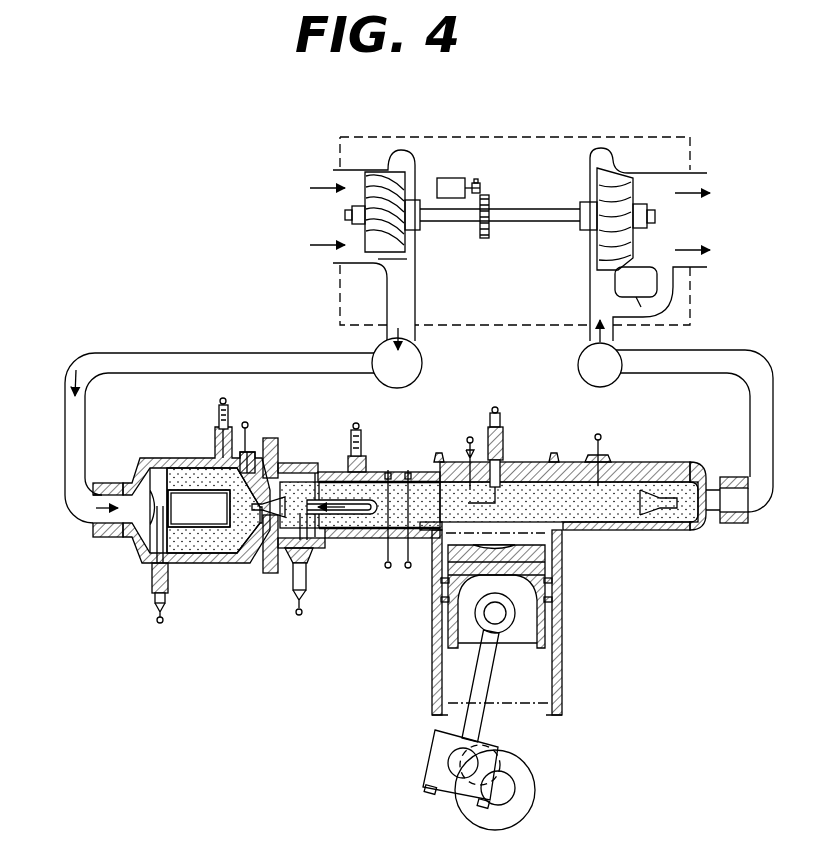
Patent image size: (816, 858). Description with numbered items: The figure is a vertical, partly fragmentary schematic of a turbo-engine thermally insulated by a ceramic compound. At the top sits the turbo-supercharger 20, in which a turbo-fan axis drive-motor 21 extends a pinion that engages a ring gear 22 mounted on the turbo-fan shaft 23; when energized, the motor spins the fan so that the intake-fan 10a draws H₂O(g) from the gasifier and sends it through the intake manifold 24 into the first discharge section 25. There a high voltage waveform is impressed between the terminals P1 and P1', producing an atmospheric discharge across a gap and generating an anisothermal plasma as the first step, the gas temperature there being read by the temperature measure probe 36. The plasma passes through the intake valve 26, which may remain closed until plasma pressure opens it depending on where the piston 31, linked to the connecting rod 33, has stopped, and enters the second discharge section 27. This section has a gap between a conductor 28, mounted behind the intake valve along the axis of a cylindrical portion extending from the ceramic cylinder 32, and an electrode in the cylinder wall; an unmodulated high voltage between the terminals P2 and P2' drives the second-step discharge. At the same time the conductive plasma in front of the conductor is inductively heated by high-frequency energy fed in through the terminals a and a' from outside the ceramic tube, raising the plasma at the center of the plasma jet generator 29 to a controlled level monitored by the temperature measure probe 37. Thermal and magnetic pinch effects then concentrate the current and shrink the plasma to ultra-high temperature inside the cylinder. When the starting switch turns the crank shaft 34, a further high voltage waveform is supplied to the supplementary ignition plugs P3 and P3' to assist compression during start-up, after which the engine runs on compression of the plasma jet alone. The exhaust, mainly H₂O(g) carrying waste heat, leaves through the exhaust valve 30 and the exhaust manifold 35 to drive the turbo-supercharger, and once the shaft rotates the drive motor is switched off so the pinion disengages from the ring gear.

The intake-fan 10a is at (385, 178).
The turbo-supercharger 20 is at (556, 137).
The turbo-fan axis drive-motor 21 is at (455, 186).
The ring gear 22 is at (488, 234).
The shaft of the turbo-fan 23 is at (528, 209).
The intake manifold 24 is at (421, 366).
The first discharge section 25 is at (196, 547).
The intake valve 26 is at (257, 575).
The second discharge section 27 is at (330, 540).
The conductor 28 is at (338, 498).
The plasma jet generator 29 is at (457, 490).
The exhaust valve 30 is at (642, 523).
The piston 31 is at (545, 622).
The ceramic cylinder 32 is at (562, 676).
The connecting rod 33 is at (468, 688).
The crank shaft 34 is at (514, 795).
The exhaust manifold 35 is at (579, 362).
The temperature measure probe 36 is at (247, 424).
The temperature measure probe 37 is at (600, 434).
The terminal P1 is at (225, 416).
The terminal P1' is at (159, 586).
The terminal P2 is at (357, 432).
The terminal P2' is at (299, 599).
The supplementary ignition plug P3 is at (489, 444).
The supplementary ignition plug P3' is at (468, 449).
The terminal a is at (387, 529).
The terminal a' is at (408, 529).